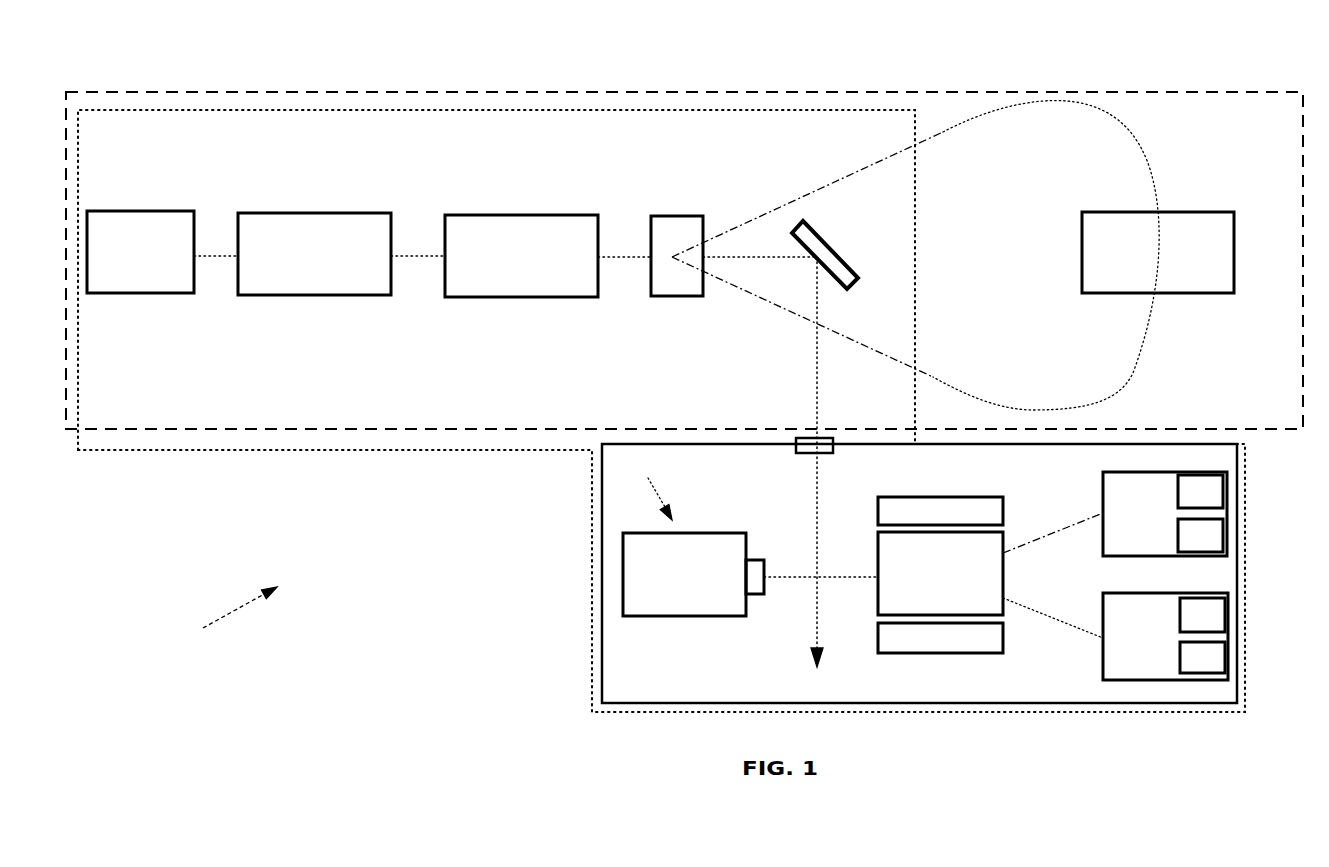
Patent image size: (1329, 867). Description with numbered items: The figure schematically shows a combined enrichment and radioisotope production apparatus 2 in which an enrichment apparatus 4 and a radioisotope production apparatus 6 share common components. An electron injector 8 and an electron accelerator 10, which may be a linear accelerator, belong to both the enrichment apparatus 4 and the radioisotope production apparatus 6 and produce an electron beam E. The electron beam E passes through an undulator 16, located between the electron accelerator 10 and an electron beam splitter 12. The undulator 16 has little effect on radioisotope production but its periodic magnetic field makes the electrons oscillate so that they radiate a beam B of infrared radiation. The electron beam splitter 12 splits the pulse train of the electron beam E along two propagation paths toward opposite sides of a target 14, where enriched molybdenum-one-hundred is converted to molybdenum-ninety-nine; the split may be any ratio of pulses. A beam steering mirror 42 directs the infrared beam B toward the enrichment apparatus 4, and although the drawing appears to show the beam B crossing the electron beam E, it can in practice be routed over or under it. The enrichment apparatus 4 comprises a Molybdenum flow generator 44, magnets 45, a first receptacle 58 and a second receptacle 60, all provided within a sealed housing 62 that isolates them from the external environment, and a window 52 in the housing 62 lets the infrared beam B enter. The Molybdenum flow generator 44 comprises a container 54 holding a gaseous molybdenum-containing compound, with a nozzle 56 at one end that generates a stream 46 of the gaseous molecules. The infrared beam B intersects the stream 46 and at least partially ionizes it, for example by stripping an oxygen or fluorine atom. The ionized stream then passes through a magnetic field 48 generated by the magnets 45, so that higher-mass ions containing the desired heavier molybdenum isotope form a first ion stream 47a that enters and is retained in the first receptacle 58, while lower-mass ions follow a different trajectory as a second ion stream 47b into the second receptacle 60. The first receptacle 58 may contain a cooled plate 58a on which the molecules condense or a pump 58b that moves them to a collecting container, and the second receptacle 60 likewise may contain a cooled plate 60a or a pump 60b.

The combined enrichment and radioisotope production apparatus 2 is at (230, 619).
The enrichment apparatus 4 is at (1247, 553).
The radioisotope production apparatus 6 is at (1196, 92).
The electron injector 8 is at (140, 252).
The electron accelerator 10 is at (314, 254).
The electron beam splitter 12 is at (672, 223).
The target 14 is at (1185, 225).
The undulator 16 is at (521, 256).
The beam steering mirror 42 is at (832, 257).
The Molybdenum flow generator 44 is at (653, 485).
The magnets 45 is at (940, 575).
The stream 46 is at (798, 578).
The first ion stream 47a is at (1068, 527).
The second ion stream 47b is at (1065, 628).
The magnetic field 48 is at (940, 573).
The window 52 is at (809, 453).
The container 54 is at (684, 574).
The nozzle 56 is at (762, 583).
The first receptacle 58 is at (1165, 514).
The cooled plate 58a is at (1200, 491).
The pump 58b is at (1200, 535).
The second receptacle 60 is at (1165, 636).
The cooled plate 60a is at (1202, 615).
The pump 60b is at (1202, 657).
The housing 62 is at (1240, 645).
The electron beam E is at (213, 255).
The beam of radiation B is at (783, 252).